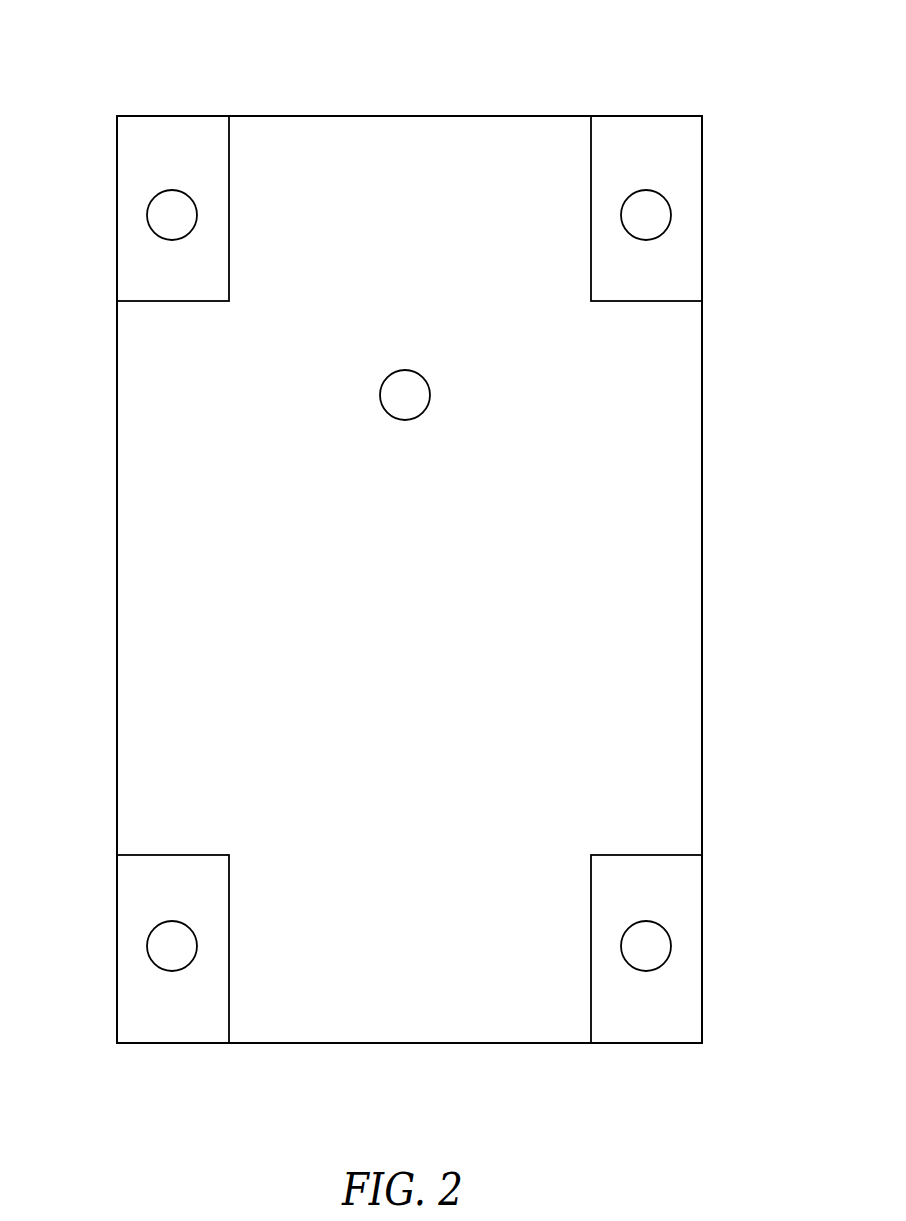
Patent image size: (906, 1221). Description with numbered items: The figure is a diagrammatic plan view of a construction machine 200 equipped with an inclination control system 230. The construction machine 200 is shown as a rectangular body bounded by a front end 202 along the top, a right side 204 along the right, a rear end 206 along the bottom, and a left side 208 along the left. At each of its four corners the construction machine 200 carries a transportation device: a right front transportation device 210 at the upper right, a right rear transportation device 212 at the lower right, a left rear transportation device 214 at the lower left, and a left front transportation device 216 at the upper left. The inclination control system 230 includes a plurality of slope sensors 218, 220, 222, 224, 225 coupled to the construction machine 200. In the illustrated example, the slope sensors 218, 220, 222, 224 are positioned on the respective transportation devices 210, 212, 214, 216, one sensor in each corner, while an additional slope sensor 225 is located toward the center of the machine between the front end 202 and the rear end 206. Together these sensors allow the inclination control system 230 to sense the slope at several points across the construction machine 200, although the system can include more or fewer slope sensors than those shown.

The construction machine 200 is at (420, 543).
The front end 202 is at (535, 116).
The right side 204 is at (702, 460).
The rear end 206 is at (285, 1044).
The left side 208 is at (117, 460).
The right front transportation device 210 is at (702, 177).
The right rear transportation device 212 is at (702, 932).
The left rear transportation device 214 is at (117, 933).
The left front transportation device 216 is at (117, 178).
The slope sensor 218 is at (621, 216).
The slope sensor 220 is at (621, 948).
The slope sensor 222 is at (197, 947).
The slope sensor 224 is at (197, 216).
The slope sensor 225 is at (380, 396).
The inclination control system 230 is at (169, 60).